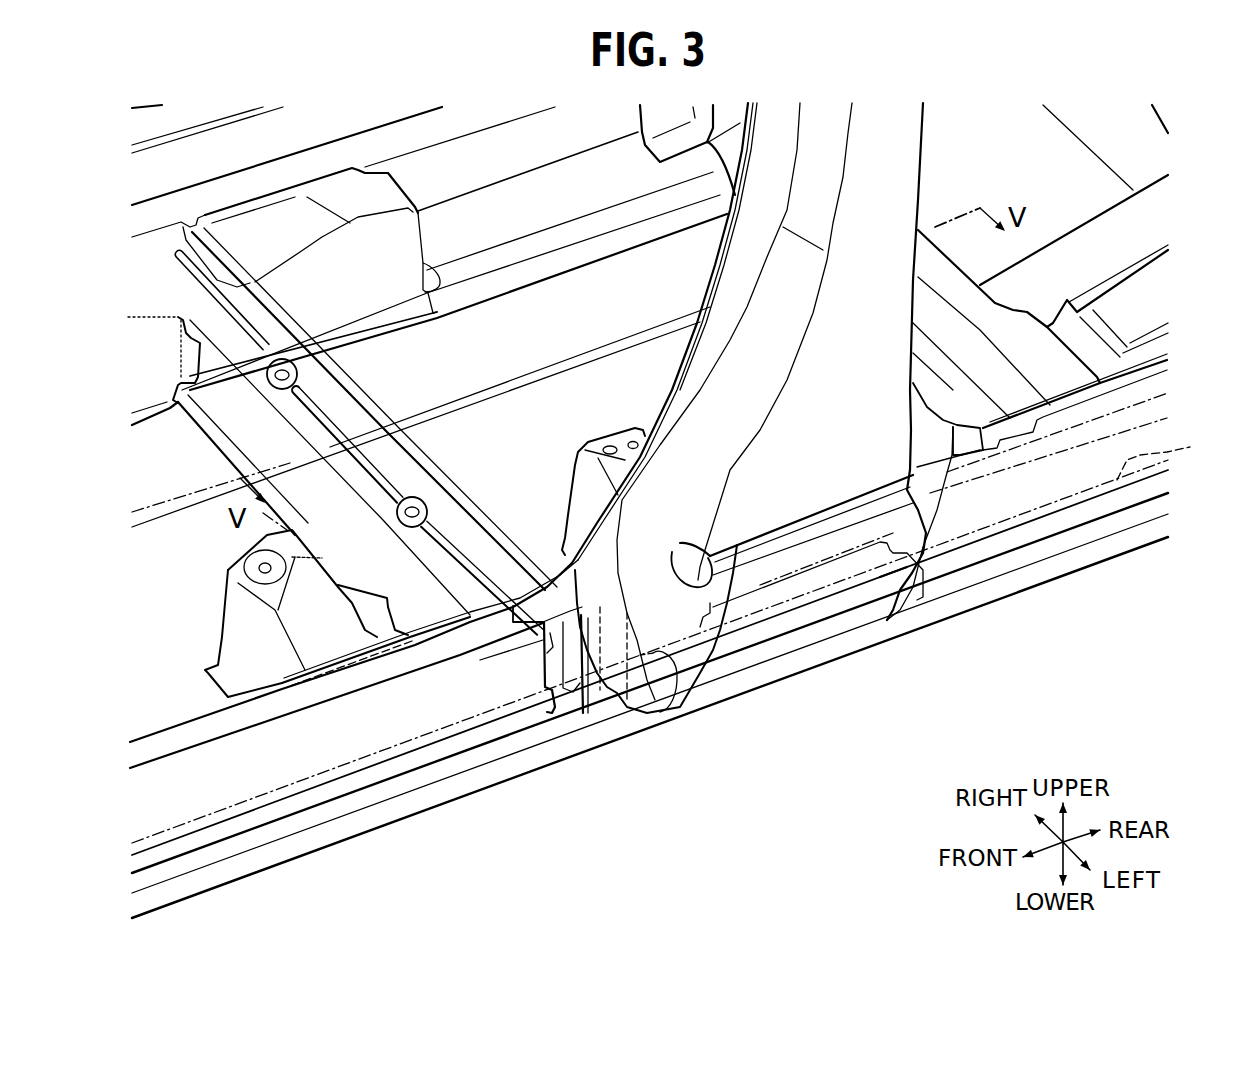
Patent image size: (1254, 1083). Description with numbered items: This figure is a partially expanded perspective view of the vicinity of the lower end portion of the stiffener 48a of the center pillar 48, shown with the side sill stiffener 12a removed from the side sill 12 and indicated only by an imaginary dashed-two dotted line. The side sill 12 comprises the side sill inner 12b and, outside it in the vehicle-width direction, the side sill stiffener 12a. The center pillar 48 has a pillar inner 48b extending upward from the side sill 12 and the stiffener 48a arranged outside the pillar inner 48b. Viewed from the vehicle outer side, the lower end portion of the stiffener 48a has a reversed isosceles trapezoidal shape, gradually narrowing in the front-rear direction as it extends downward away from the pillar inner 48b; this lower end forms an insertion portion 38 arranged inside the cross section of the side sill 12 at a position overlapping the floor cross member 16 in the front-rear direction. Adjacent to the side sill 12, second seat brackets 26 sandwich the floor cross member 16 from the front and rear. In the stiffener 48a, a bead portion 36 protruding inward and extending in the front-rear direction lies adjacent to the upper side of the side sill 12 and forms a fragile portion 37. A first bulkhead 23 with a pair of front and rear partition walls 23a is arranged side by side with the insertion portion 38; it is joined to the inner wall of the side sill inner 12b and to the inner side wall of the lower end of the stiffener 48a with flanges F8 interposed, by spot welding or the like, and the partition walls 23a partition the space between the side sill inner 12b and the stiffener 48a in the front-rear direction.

The side sill 12 is at (686, 614).
The side sill stiffener 12a is at (1120, 478).
The side sill inner 12b is at (405, 802).
The floor cross member 16 is at (343, 403).
The first bulkhead 23 is at (669, 747).
The partition wall 23a is at (573, 693).
The second seat bracket 26 is at (240, 628).
The bead portion 36 is at (733, 695).
The fragile portion 37 is at (658, 681).
The insertion portion 38 is at (843, 627).
The center pillar 48 is at (648, 422).
The stiffener 48a is at (883, 143).
The pillar inner 48b is at (550, 592).
The flange F8 is at (545, 688).